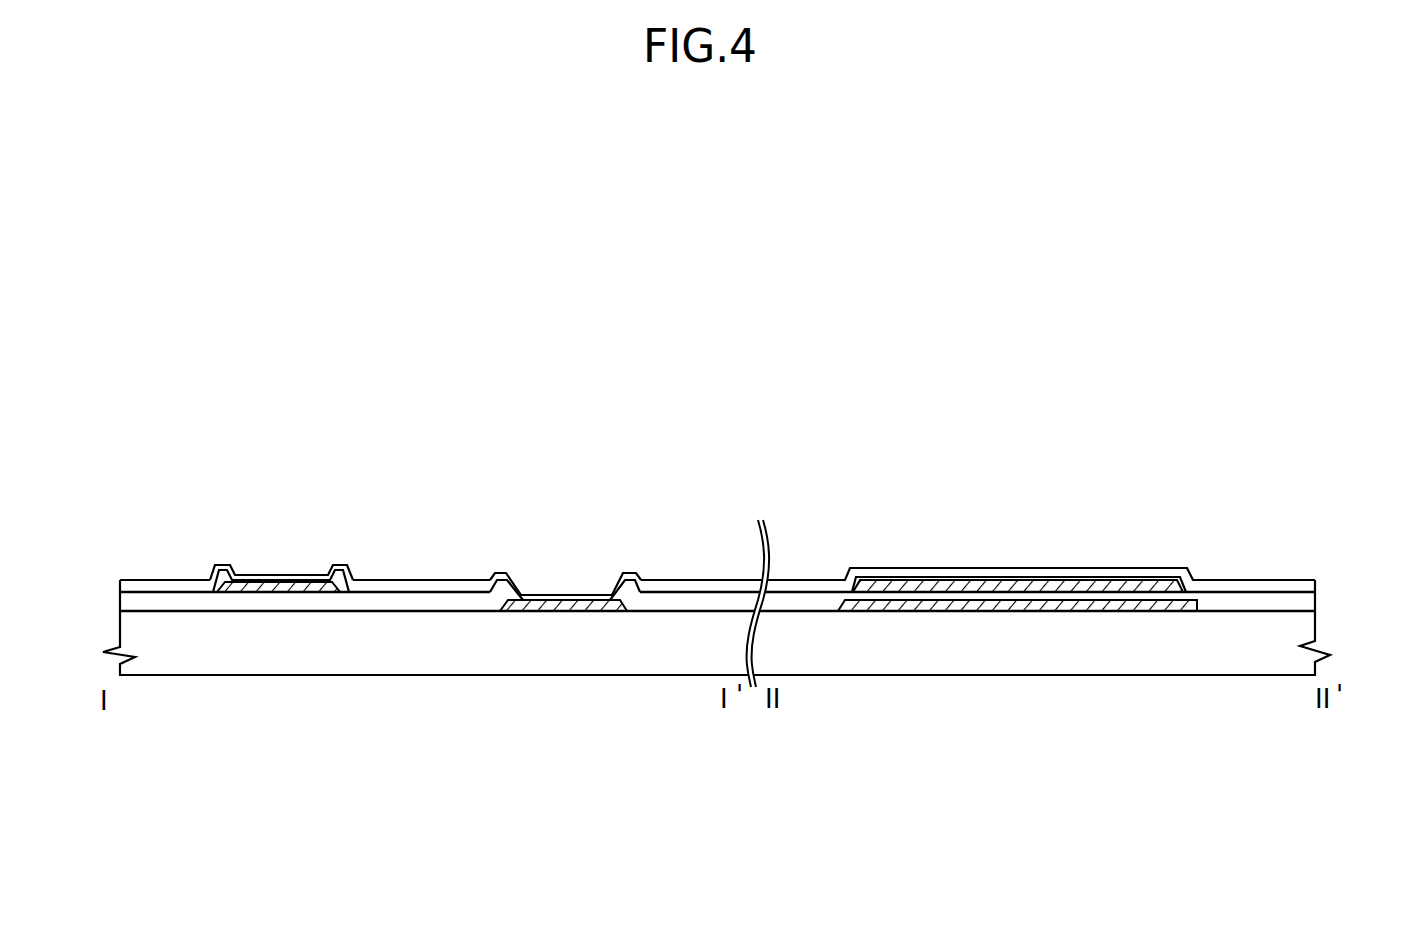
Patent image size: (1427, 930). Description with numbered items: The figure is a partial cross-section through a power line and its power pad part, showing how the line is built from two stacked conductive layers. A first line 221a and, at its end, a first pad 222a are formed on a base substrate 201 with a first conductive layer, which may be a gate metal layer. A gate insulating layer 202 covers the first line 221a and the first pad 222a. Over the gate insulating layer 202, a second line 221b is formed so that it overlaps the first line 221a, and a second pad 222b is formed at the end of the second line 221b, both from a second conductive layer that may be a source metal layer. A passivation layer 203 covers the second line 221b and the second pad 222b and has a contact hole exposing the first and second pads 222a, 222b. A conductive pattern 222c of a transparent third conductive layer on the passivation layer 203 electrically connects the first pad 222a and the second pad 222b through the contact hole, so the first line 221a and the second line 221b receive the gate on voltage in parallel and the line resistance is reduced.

The base substrate 201 is at (1305, 628).
The gate insulating layer 202 is at (1305, 603).
The passivation layer 203 is at (1305, 583).
The first line 221a is at (948, 605).
The second line 221b is at (1062, 587).
The first pad 222a is at (523, 608).
The second pad 222b is at (299, 592).
The conductive pattern 222c is at (282, 582).